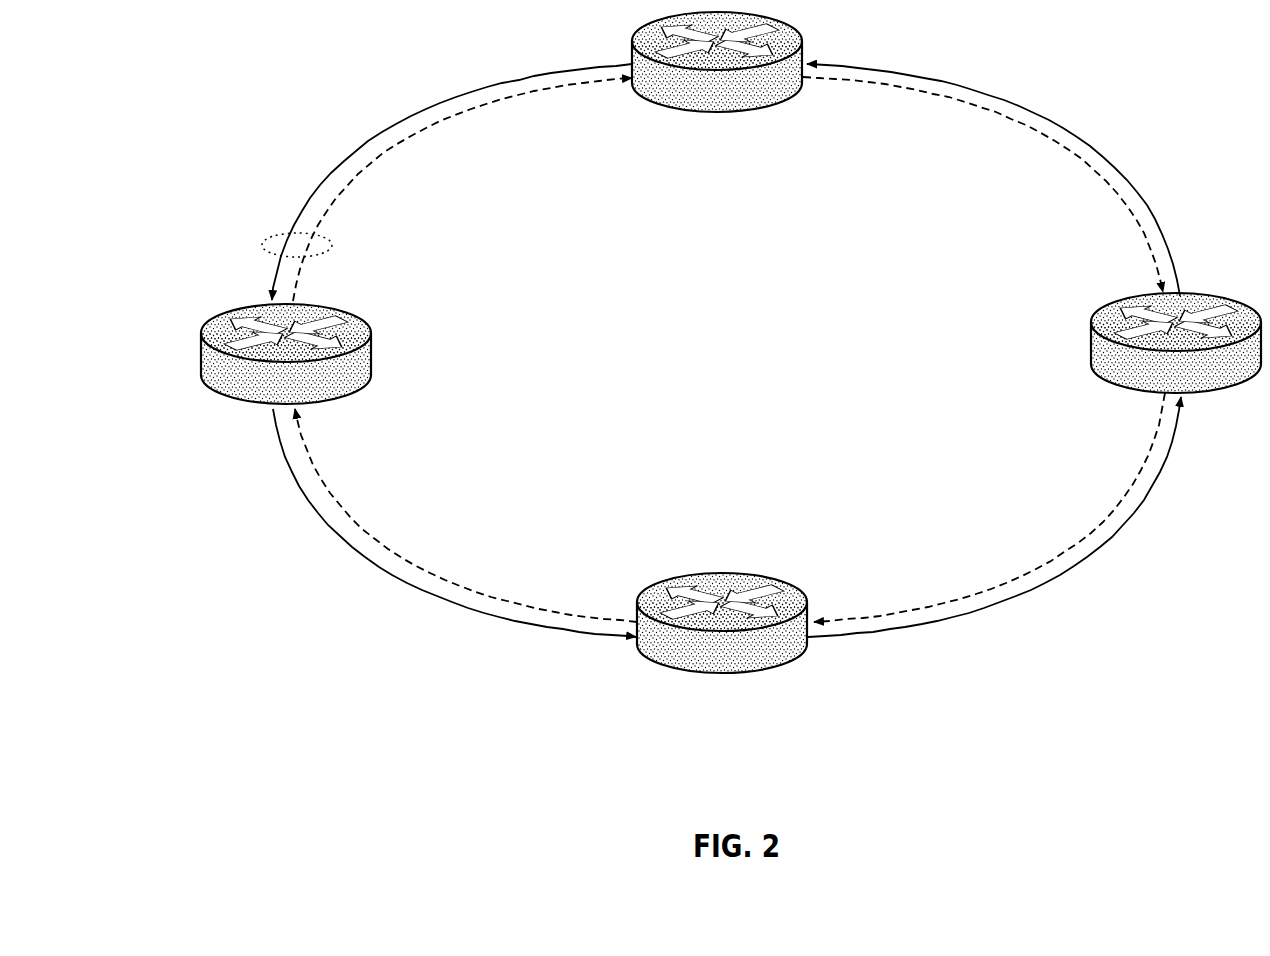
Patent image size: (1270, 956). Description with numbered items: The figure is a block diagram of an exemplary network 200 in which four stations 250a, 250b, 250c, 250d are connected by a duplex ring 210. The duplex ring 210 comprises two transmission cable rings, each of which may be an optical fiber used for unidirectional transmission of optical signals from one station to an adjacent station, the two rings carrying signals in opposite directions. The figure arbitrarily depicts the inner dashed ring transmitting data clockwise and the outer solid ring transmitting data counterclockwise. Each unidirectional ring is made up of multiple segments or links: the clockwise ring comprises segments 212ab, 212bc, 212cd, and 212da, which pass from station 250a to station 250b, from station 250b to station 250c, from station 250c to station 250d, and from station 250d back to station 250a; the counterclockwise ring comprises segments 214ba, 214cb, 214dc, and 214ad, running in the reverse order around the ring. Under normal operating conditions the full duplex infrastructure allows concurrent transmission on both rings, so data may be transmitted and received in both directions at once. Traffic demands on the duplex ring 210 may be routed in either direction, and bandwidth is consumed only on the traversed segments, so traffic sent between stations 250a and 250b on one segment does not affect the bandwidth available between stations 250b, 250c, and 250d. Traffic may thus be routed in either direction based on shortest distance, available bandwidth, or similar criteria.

The network 200 is at (204, 126).
The duplex ring 210 is at (262, 246).
The segment of ring 212 212da is at (550, 89).
The segment of ring 212 212ab is at (1000, 114).
The segment of ring 212 212bc is at (920, 606).
The segment of ring 212 212cd is at (497, 598).
The segment of ring 214 214ad is at (384, 131).
The segment of ring 214 214ba is at (935, 78).
The segment of ring 214 214cb is at (997, 603).
The segment of ring 214 214dc is at (427, 592).
The station 250a is at (777, 104).
The station 250b is at (1237, 384).
The station 250c is at (727, 675).
The station 250d is at (241, 407).